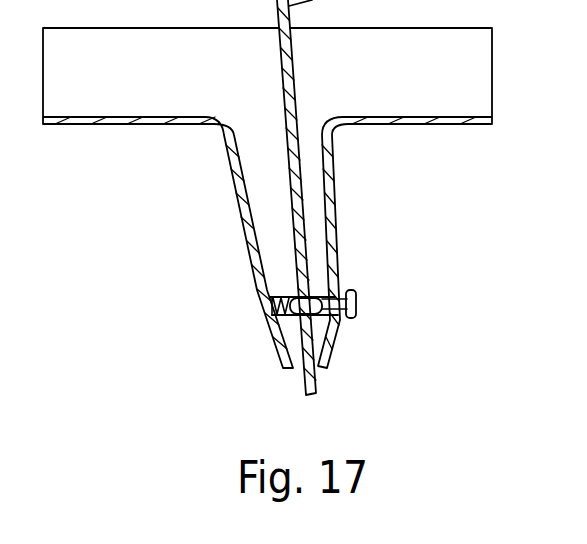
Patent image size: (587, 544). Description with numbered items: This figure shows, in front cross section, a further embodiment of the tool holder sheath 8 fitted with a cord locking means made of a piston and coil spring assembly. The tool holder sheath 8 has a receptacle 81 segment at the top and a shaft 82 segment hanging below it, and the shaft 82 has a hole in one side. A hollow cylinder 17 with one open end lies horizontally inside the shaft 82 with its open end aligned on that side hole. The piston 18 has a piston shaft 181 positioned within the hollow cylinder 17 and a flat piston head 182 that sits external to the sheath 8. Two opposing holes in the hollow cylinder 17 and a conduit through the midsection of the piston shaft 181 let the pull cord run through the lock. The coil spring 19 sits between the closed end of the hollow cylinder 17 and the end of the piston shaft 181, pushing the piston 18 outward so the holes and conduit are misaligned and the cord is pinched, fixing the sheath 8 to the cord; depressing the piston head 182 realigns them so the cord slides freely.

The tool holder sheath 8 is at (264, 198).
The receptacle 81 is at (88, 100).
The shaft 82 is at (257, 180).
The hollow cylinder 17 is at (280, 297).
The piston 18 is at (304, 201).
The piston shaft 181 is at (297, 318).
The piston head 182 is at (356, 304).
The coil spring 19 is at (285, 316).